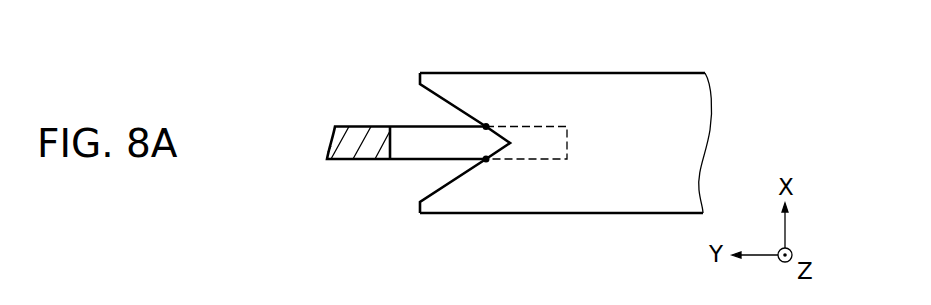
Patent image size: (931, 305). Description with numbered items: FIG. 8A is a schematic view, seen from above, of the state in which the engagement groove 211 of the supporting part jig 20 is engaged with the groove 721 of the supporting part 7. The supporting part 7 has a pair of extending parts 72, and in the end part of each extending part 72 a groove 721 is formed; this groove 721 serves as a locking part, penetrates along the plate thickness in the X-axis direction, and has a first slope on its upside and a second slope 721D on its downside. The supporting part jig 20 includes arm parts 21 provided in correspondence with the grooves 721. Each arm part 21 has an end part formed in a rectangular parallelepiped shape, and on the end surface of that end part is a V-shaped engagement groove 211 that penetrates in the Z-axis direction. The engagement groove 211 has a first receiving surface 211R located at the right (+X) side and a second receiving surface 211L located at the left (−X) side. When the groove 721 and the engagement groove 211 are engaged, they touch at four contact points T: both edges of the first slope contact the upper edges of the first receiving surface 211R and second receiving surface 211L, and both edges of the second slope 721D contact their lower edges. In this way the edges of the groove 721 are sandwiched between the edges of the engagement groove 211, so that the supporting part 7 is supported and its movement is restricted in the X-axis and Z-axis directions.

The supporting part jig 20 is at (550, 145).
The arm part 21 is at (550, 145).
The engagement groove 211 is at (431, 145).
The first receiving surface 211R is at (437, 95).
The second receiving surface 211L is at (434, 192).
The supporting part 7 is at (362, 135).
The extending part 72 is at (362, 135).
The groove 721 is at (309, 164).
The second slope 721D is at (404, 152).
The contact point T is at (488, 124).